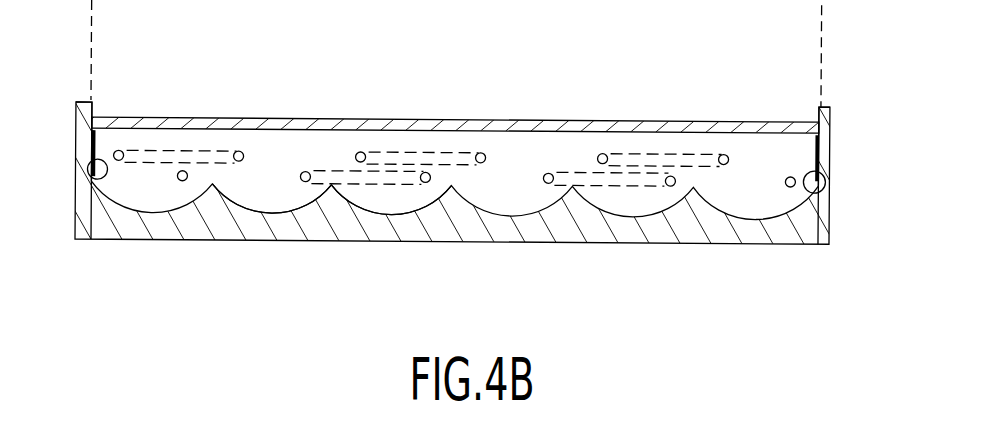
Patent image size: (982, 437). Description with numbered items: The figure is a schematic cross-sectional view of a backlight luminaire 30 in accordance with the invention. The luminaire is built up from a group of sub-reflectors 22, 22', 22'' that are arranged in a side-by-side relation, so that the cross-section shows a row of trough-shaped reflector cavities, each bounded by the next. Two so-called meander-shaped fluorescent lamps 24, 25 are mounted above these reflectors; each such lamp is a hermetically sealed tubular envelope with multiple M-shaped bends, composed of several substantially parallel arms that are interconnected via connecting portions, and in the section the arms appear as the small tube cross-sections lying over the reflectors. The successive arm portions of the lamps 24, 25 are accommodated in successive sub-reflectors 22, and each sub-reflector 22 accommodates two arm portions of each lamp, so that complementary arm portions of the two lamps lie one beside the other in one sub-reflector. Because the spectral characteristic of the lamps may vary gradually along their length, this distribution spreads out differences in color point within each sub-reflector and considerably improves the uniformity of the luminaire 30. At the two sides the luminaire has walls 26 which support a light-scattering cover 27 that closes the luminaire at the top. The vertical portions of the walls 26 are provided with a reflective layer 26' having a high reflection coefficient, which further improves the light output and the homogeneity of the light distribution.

The backlight luminaire 30 is at (779, 98).
The sub-reflector 22 is at (449, 198).
The sub-reflector 22' is at (272, 238).
The sub-reflector 22'' is at (391, 239).
The meander-shaped fluorescent lamp 24 is at (118, 150).
The meander-shaped fluorescent lamp 25 is at (670, 182).
The wall 26 is at (454, 173).
The reflective layer 26' is at (457, 166).
The light-scattering cover 27 is at (597, 126).